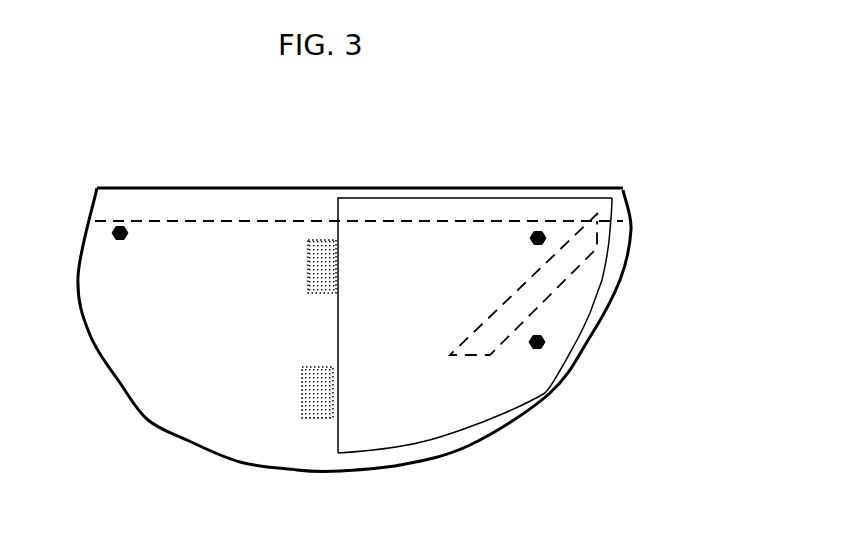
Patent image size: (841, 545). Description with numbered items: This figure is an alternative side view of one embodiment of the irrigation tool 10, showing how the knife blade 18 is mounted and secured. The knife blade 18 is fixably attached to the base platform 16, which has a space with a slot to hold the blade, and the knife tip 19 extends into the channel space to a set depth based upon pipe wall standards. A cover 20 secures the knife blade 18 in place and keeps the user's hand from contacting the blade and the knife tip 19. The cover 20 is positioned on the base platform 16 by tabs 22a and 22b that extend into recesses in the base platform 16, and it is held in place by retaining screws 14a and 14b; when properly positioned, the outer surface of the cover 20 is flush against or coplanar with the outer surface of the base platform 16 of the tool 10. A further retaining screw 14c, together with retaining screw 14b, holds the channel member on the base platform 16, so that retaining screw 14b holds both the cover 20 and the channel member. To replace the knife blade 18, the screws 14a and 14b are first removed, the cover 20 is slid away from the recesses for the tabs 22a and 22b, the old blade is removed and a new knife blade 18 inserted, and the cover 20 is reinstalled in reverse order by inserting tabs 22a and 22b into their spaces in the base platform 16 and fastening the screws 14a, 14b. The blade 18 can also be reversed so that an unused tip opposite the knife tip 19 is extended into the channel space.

The irrigation tool 10 is at (149, 180).
The retaining screw 14a is at (545, 345).
The retaining screw 14b is at (538, 238).
The retaining screw 14c is at (128, 232).
The base platform 16 is at (208, 302).
The knife blade 18 is at (497, 330).
The knife tip 19 is at (598, 213).
The cover 20 is at (413, 385).
The tab 22a is at (313, 278).
The tab 22b is at (317, 395).